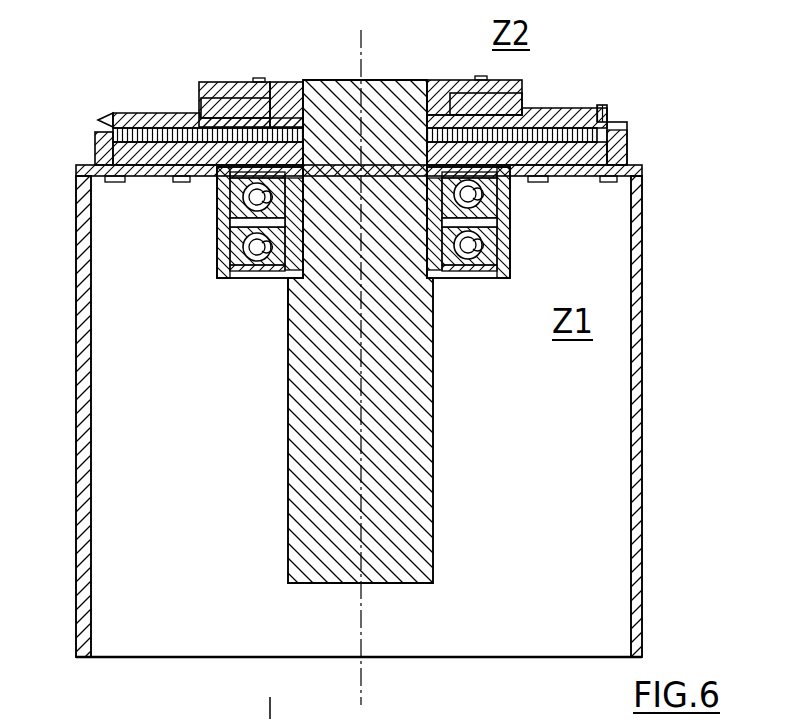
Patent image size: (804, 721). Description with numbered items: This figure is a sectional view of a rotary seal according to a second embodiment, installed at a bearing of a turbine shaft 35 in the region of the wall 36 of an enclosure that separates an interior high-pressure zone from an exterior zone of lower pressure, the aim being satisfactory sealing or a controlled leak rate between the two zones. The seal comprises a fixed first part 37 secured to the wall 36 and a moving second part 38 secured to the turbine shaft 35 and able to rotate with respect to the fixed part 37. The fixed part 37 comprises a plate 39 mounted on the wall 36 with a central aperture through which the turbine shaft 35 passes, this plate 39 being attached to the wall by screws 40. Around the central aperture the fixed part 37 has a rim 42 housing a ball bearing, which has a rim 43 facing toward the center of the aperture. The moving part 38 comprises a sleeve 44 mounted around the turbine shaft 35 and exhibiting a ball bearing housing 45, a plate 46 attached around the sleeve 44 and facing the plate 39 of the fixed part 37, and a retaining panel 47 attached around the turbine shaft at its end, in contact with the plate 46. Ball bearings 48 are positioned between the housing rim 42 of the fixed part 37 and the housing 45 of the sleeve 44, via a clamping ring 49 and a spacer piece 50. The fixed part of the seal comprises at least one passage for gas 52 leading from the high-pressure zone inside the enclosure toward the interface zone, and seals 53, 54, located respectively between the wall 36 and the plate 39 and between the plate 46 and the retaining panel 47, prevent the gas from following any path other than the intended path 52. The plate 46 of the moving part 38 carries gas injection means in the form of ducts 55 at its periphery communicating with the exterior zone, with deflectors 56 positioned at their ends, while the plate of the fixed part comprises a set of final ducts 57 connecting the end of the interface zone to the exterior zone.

The turbine shaft 35 is at (405, 545).
The wall of the enclosure 36 is at (641, 272).
The fixed first part 37 is at (632, 143).
The moving second part 38 is at (187, 107).
The plate 39 is at (97, 153).
The screws 40 is at (173, 182).
The rim 42 is at (220, 227).
The rim 43 is at (230, 282).
The sleeve 44 is at (435, 278).
The ball bearing housing 45 is at (445, 278).
The plate 46 is at (537, 110).
The retaining panel 47 is at (287, 102).
The ball bearings 48 is at (482, 238).
The clamping ring 49 is at (386, 138).
The spacer piece 50 is at (290, 303).
The passage for gas 52 is at (478, 155).
The seal 53 is at (147, 133).
The seal 54 is at (248, 83).
The ducts 55 is at (603, 105).
The deflectors 56 is at (107, 116).
The final ducts 57 is at (628, 122).